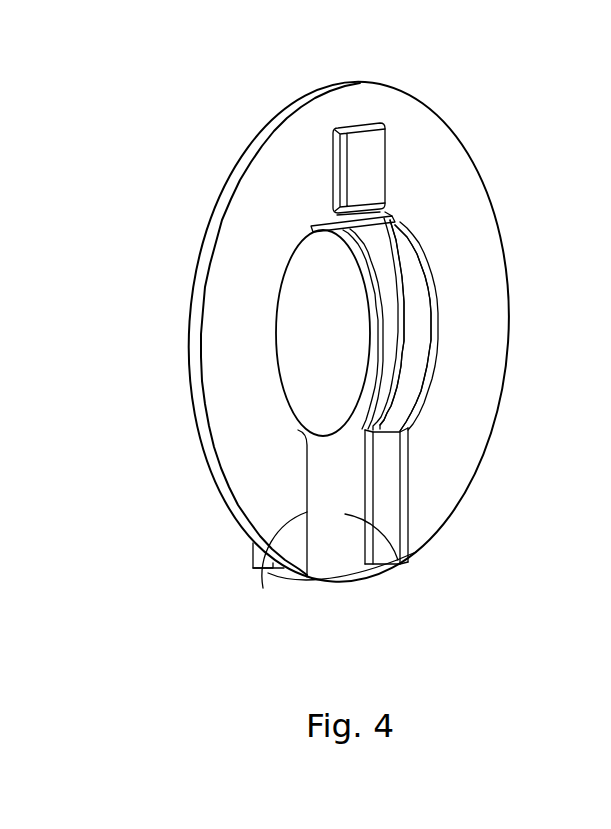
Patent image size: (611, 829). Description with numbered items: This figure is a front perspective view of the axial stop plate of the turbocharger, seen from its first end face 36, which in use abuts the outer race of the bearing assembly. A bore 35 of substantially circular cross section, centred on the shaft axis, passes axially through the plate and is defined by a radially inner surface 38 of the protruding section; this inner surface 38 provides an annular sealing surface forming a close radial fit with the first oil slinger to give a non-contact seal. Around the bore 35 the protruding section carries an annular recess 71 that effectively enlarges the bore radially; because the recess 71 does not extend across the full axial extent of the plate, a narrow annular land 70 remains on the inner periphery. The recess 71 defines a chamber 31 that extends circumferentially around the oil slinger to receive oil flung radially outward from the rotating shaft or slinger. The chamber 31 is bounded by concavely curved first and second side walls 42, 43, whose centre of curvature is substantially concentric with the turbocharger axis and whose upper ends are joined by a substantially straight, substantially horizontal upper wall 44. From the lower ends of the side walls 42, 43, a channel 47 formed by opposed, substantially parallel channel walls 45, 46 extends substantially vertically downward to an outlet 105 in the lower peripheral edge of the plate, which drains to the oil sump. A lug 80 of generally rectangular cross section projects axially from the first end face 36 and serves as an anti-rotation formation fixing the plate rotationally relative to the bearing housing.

The chamber 31 is at (418, 357).
The bore 35 is at (335, 363).
The first end face 36 is at (263, 203).
The inner surface 38 is at (374, 293).
The first side wall 42 is at (412, 386).
The second side wall 43 is at (276, 368).
The upper wall 44 is at (333, 223).
The channel wall 45 is at (385, 505).
The channel wall 46 is at (263, 588).
The channel 47 is at (397, 563).
The annular land 70 is at (375, 263).
The annular recess 71 is at (418, 328).
The lug 80 is at (366, 160).
The outlet 105 is at (343, 578).